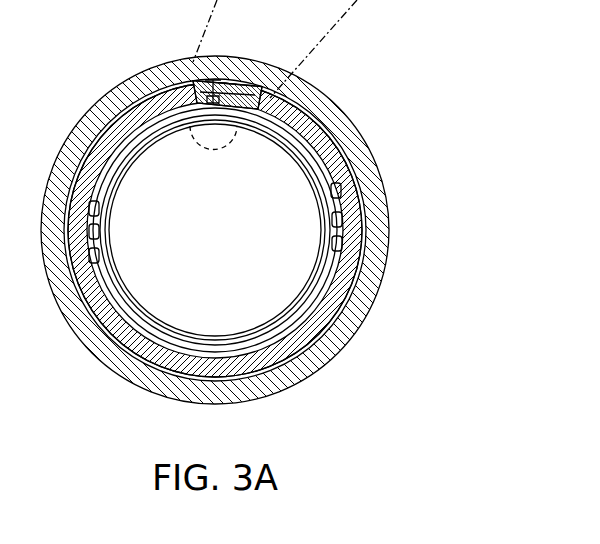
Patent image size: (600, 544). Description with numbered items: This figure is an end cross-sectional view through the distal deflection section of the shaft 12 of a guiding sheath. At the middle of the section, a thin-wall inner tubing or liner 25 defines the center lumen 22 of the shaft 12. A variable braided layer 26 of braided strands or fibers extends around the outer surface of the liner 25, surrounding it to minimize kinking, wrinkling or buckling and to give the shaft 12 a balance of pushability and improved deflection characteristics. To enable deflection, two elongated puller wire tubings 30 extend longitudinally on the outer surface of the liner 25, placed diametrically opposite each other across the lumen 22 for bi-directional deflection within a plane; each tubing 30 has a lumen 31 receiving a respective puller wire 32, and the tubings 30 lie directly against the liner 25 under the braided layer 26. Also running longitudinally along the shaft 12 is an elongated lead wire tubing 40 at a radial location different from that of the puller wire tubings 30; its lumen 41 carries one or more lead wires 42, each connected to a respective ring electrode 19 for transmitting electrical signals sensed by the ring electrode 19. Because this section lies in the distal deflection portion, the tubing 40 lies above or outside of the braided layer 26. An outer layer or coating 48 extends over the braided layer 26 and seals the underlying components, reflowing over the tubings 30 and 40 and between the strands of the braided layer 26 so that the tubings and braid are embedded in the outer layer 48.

The shaft 12 is at (201, 438).
The ring electrode 19 is at (118, 88).
The center lumen 22 is at (248, 235).
The inner tubing or liner 25 is at (340, 302).
The braided layer 26 is at (350, 165).
The puller wire tubing 30 is at (332, 216).
The lumen of puller wire tubing 31 is at (355, 253).
The puller wire 32 is at (358, 210).
The lead wire tubing 40 is at (296, 83).
The lumen of lead wire tubing 41 is at (190, 78).
The lead wire 42 is at (322, 49).
The outer layer or coating 48 is at (333, 128).